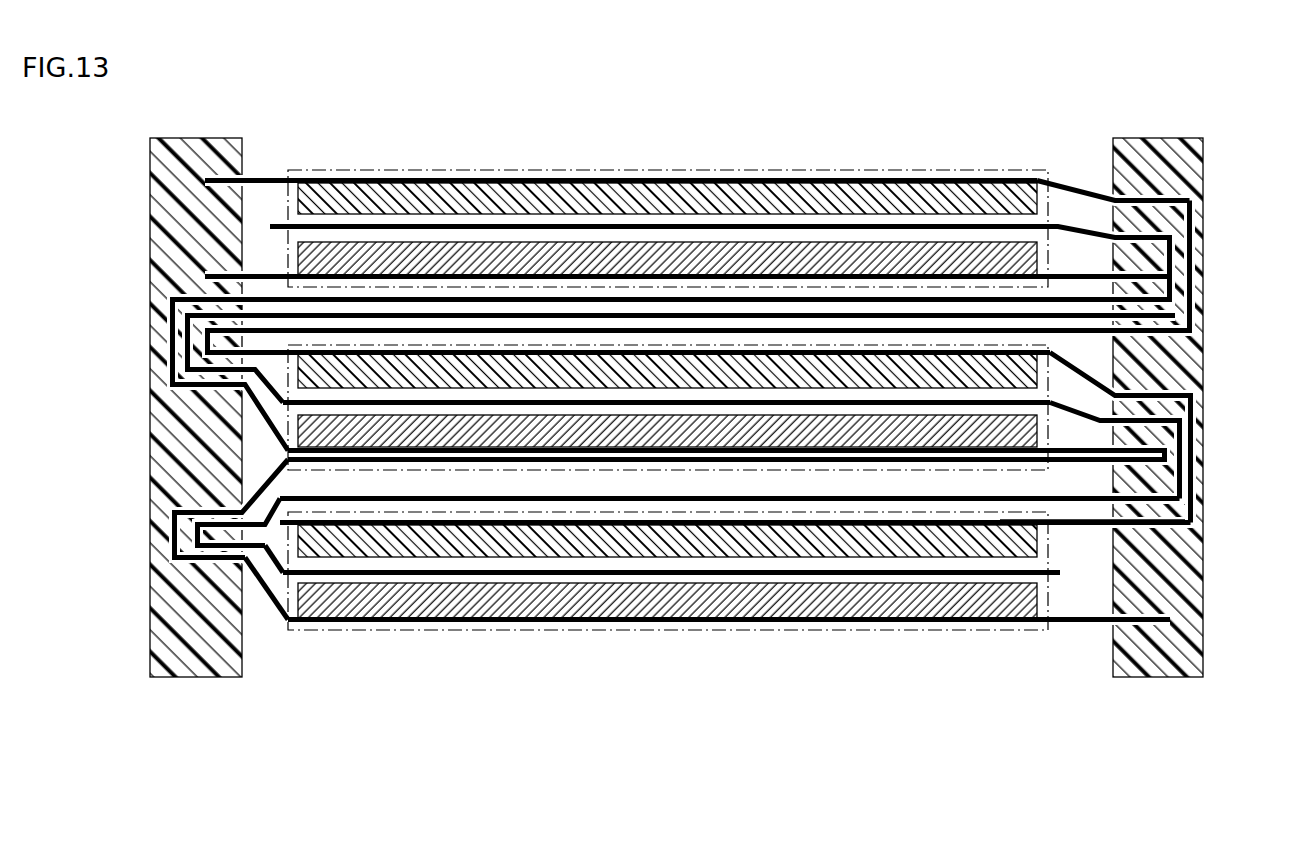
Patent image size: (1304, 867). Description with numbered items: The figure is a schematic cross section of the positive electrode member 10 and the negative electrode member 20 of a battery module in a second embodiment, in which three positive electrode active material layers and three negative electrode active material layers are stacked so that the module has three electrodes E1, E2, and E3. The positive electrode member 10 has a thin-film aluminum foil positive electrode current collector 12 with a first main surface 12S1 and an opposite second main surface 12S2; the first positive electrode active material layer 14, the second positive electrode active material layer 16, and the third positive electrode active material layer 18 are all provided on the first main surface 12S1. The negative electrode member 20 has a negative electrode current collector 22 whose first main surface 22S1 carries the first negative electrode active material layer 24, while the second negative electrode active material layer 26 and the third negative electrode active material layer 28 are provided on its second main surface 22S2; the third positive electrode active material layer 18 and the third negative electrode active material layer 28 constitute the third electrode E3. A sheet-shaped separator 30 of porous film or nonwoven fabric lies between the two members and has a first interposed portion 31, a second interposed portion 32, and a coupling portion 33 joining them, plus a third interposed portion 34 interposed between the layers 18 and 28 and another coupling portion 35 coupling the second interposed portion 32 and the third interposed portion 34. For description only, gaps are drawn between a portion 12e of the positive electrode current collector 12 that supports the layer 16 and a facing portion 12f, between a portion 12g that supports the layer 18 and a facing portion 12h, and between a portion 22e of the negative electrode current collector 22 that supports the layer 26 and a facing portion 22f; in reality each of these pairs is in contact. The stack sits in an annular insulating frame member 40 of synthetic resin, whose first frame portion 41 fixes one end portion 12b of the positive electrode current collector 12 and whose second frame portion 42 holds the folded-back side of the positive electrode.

The positive electrode member 10 is at (262, 478).
The positive electrode current collector 12 is at (1060, 624).
The one end portion of positive electrode current collector 12b is at (1103, 624).
The portion of positive electrode current collector supporting second positive elect 12e is at (1143, 447).
The portion of positive electrode current collector facing portion 12e 12f is at (1133, 462).
The portion of positive electrode current collector supporting third positive electr 12g is at (1137, 277).
The portion of positive electrode current collector facing portion 12g 12h is at (1137, 297).
The first main surface 12S1 is at (268, 575).
The second main surface 12S2 is at (283, 616).
The first positive electrode active material layer 14 is at (955, 600).
The second positive electrode active material layer 16 is at (545, 442).
The third positive electrode active material layer 18 is at (540, 258).
The negative electrode member 20 is at (268, 175).
The negative electrode current collector 22 is at (1078, 182).
The portion of negative electrode current collector supporting second negative elect 22e is at (1127, 357).
The portion of negative electrode current collector facing portion 22e 22f is at (1050, 352).
The first main surface of negative electrode current collector 22S1 is at (1097, 526).
The second main surface of negative electrode current collector 22S2 is at (1077, 520).
The first negative electrode active material layer 24 is at (822, 548).
The second negative electrode active material layer 26 is at (405, 376).
The third negative electrode active material layer 28 is at (355, 195).
The separator 30 is at (267, 507).
The first interposed portion 31 is at (885, 574).
The second interposed portion 32 is at (480, 404).
The coupling portion 33 is at (704, 501).
The third interposed portion 34 is at (455, 226).
The another coupling portion 35 is at (680, 315).
The frame member 40 is at (676, 385).
The first frame portion 41 is at (1150, 150).
The second frame portion 42 is at (187, 150).
The first electrode E1 is at (762, 632).
The second electrode E2 is at (612, 472).
The third electrode E3 is at (612, 170).